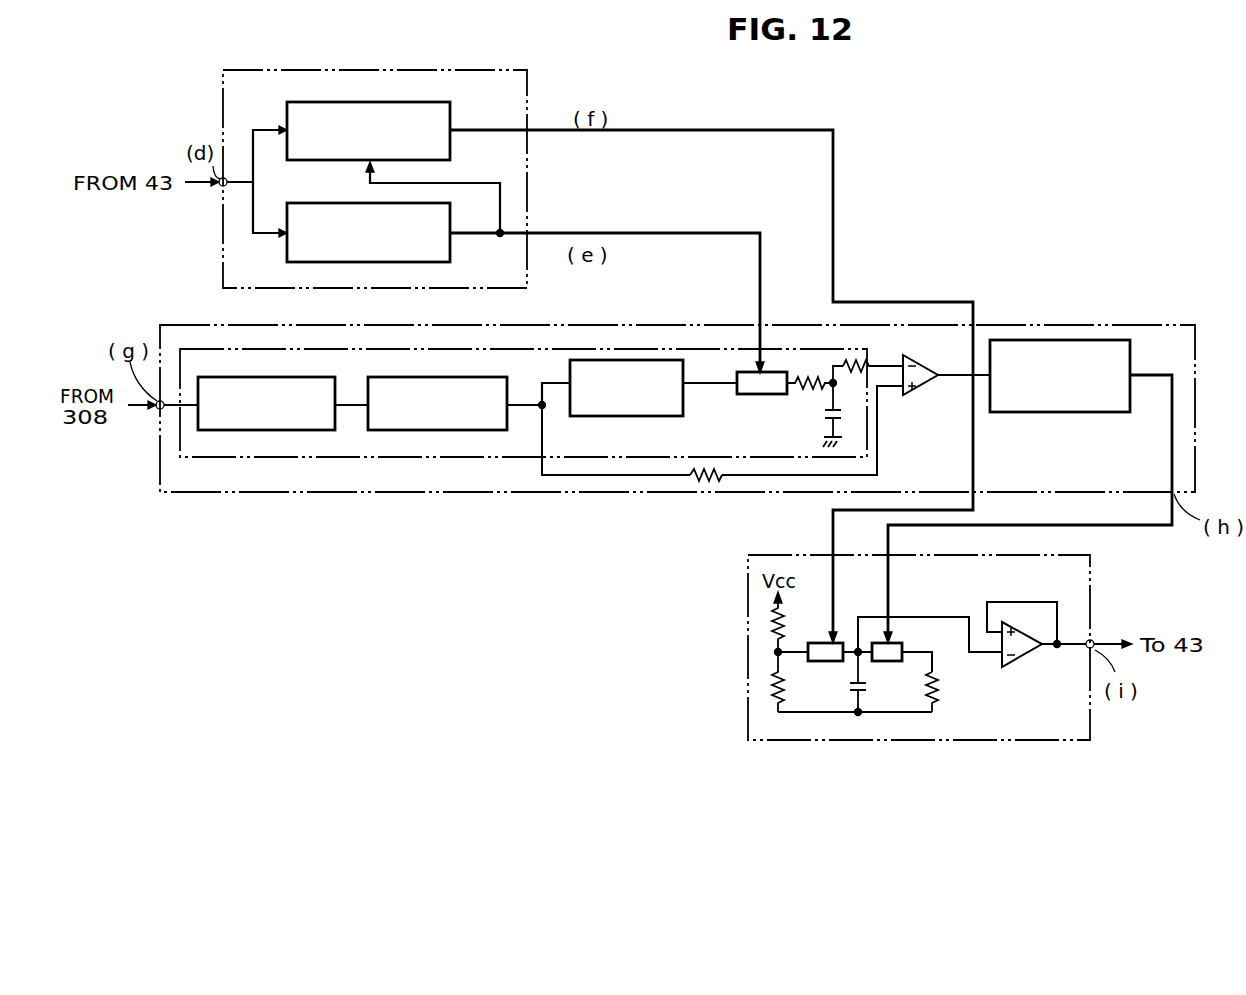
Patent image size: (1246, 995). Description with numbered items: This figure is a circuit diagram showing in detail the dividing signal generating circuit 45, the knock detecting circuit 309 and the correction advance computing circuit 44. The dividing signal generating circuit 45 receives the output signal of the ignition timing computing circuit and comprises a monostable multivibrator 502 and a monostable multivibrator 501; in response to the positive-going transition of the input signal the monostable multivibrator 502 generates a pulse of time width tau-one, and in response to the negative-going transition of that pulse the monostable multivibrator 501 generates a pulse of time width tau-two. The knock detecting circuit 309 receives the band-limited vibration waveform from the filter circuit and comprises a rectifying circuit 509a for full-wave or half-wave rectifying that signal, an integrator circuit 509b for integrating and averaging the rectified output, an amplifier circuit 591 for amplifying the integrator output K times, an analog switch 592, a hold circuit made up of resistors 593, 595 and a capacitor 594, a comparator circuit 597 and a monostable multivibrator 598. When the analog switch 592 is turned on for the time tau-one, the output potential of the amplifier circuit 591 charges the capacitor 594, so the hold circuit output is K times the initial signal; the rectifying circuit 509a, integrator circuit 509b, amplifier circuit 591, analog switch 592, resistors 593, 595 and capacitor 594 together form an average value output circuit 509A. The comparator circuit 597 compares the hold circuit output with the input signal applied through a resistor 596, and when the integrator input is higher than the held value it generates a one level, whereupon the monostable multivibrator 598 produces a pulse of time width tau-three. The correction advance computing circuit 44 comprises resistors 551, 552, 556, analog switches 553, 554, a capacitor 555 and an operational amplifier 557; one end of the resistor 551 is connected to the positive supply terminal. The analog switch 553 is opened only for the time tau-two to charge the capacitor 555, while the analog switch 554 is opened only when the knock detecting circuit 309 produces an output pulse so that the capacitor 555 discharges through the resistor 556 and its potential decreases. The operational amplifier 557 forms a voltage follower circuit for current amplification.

The dividing signal generating circuit 45 is at (388, 68).
The monostable multivibrator 501 is at (410, 102).
The monostable multivibrator 502 is at (444, 203).
The knock detecting circuit 309 is at (478, 494).
The average value output circuit 509A is at (667, 330).
The rectifying circuit 509a is at (230, 377).
The integrator circuit 509b is at (436, 376).
The amplifier circuit 591 is at (622, 416).
The analog switch 592 is at (737, 394).
The resistor 593 is at (826, 378).
The capacitor 594 is at (826, 412).
The resistor 595 is at (850, 360).
The resistor 596 is at (708, 470).
The comparator circuit 597 is at (916, 358).
The monostable multivibrator 598 is at (1148, 354).
The correction advance computing circuit 44 is at (878, 742).
The resistor 551 is at (770, 622).
The resistor 552 is at (772, 680).
The analog switch 553 is at (822, 643).
The analog switch 554 is at (898, 644).
The capacitor 555 is at (864, 685).
The resistor 556 is at (940, 684).
The operational amplifier 557 is at (1028, 660).